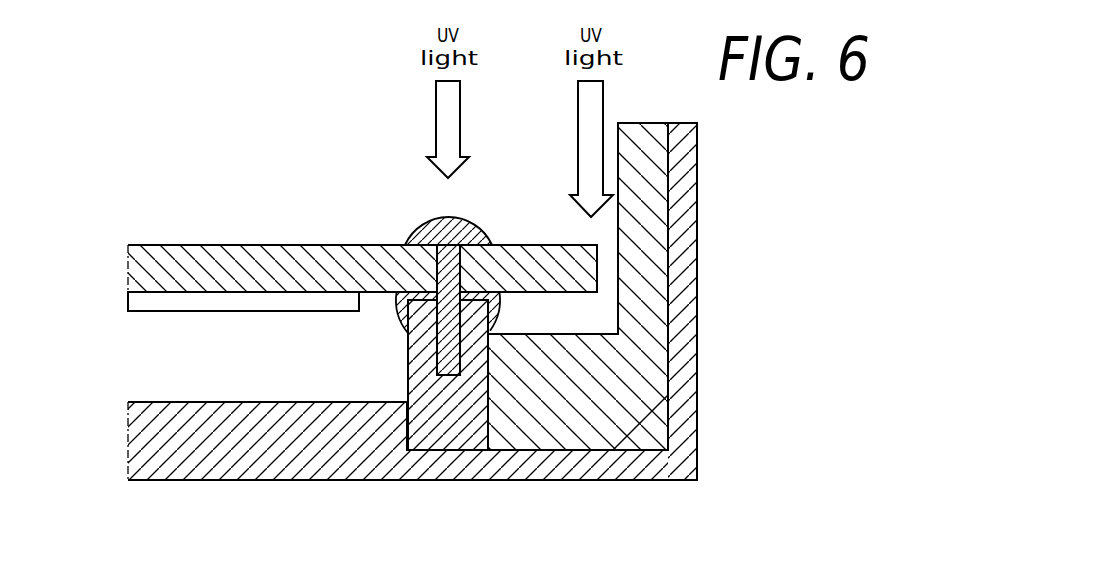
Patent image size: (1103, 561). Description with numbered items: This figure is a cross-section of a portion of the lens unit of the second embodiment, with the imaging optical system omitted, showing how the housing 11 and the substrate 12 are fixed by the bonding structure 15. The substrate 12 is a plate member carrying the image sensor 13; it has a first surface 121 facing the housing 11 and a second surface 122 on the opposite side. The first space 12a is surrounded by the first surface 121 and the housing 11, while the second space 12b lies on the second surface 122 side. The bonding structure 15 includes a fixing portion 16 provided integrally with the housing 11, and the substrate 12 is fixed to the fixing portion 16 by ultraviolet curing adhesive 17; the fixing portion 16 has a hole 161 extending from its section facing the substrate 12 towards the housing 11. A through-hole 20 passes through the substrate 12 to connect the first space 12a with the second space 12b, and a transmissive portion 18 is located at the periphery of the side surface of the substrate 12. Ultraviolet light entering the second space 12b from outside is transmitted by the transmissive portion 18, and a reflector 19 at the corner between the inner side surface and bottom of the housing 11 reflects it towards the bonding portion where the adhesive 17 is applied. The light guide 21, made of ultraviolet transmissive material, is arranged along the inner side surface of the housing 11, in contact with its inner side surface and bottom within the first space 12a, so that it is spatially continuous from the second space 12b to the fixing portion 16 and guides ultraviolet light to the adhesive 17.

The housing 11 is at (683, 203).
The substrate 12 is at (160, 267).
The first space 12a is at (201, 345).
The second space 12b is at (345, 142).
The first surface 121 is at (295, 293).
The second surface 122 is at (259, 245).
The image sensor 13 is at (235, 313).
The bonding structure 15 is at (468, 212).
The fixing portion 16 is at (450, 432).
The hole 161 is at (443, 354).
The adhesive 17 is at (430, 219).
The transmissive portion 18 is at (605, 272).
The reflector 19 is at (645, 427).
The through-hole 20 is at (447, 272).
The light guide 21 is at (638, 148).